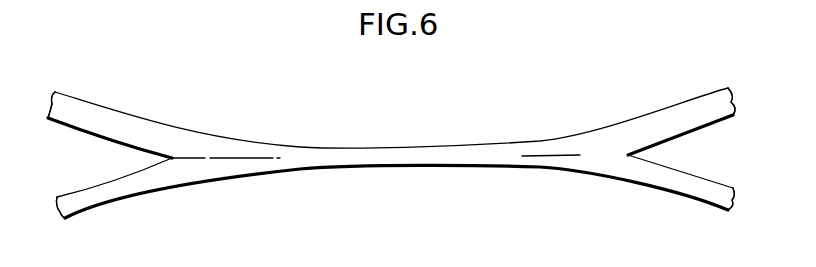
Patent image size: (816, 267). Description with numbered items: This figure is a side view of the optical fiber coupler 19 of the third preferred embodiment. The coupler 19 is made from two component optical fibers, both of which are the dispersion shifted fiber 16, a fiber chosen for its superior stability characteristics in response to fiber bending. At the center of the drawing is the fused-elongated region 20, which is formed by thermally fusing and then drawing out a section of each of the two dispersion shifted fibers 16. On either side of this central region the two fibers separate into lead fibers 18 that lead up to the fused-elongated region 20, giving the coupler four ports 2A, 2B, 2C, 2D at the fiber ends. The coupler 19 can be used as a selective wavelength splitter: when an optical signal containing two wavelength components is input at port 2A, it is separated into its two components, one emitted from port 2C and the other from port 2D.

The port 2A is at (32, 105).
The port 2B is at (42, 210).
The port 2C is at (746, 101).
The port 2D is at (748, 201).
The dispersion shifted fiber 16 is at (648, 118).
The lead fibers 18 is at (52, 90).
The optical fiber coupler 19 is at (493, 112).
The fused-elongated region 20 is at (420, 170).